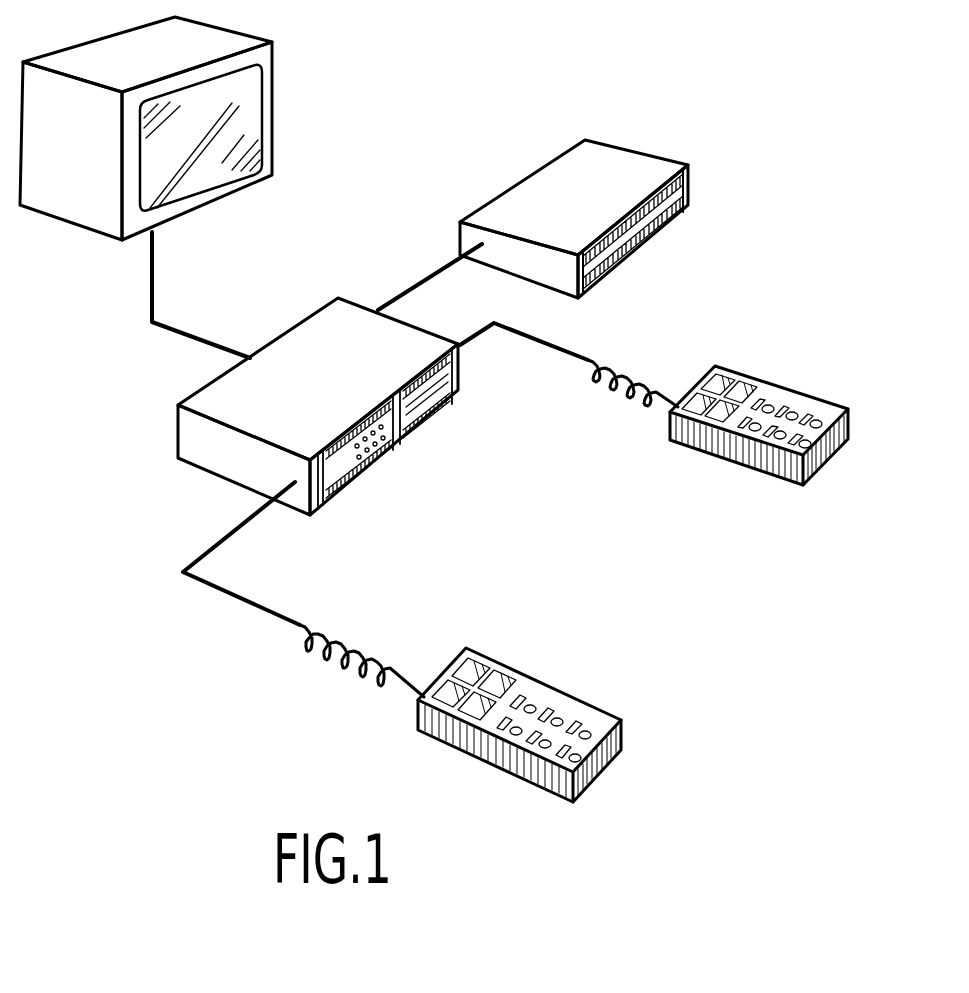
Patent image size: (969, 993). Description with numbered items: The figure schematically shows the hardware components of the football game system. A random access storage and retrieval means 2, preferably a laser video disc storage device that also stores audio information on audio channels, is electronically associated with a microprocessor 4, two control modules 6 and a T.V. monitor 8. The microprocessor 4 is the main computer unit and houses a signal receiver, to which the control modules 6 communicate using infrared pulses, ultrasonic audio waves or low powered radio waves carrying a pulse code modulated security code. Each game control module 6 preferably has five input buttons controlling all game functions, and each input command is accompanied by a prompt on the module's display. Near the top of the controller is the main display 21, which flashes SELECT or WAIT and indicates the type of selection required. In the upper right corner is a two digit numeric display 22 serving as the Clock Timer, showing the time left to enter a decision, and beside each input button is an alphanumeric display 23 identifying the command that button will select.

The T.V. monitor 8 is at (262, 88).
The random access storage and retrieval means 2 is at (533, 187).
The microprocessor 4 is at (316, 333).
The control module 6 is at (733, 448).
The main display 21 is at (697, 392).
The two digit numeric display 22 is at (762, 392).
The alphanumeric display 23 is at (838, 438).